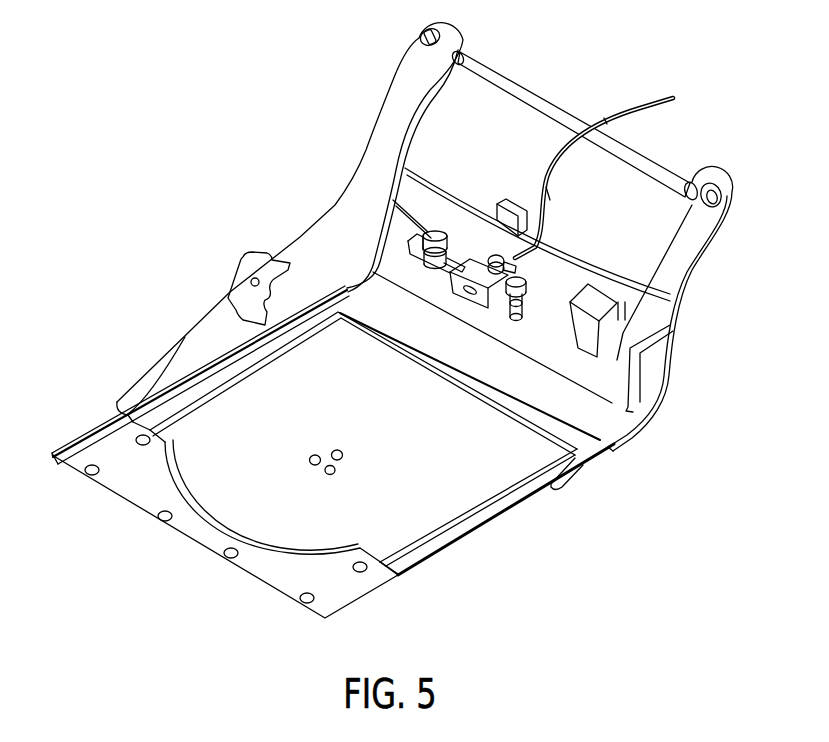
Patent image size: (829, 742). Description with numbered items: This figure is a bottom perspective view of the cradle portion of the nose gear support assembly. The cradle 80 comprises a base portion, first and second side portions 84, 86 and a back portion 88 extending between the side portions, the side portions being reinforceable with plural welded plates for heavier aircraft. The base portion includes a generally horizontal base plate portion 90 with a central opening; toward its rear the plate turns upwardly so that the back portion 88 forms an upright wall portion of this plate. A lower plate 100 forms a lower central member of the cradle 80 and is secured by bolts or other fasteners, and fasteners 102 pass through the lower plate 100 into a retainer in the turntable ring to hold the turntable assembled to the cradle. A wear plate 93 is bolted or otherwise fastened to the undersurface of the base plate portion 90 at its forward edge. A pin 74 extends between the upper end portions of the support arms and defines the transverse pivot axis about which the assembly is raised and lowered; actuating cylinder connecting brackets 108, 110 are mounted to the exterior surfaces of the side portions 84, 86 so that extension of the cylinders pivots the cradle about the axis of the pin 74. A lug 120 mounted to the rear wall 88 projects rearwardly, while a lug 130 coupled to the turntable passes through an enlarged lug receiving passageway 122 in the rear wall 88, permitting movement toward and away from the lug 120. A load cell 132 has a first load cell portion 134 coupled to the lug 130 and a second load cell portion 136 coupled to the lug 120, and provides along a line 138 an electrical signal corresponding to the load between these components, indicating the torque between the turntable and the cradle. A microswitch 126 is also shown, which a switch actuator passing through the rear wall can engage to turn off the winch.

The pin 74 is at (575, 125).
The cradle 80 is at (392, 340).
The first side portion 84 is at (290, 222).
The second side portion 86 is at (620, 476).
The back portion 88 is at (670, 308).
The base plate portion 90 is at (314, 452).
The wear plate 93 is at (226, 546).
The lower plate 100 is at (497, 509).
The fasteners 102 is at (323, 474).
The actuating cylinder connecting bracket 108 is at (236, 288).
The actuating cylinder connecting bracket 110 is at (573, 497).
The lug 120 is at (443, 211).
The lug receiving passageway 122 is at (534, 365).
The microswitch 126 is at (668, 368).
The lug 130 is at (554, 280).
The load cell 132 is at (497, 222).
The first load cell portion 134 is at (466, 340).
The second load cell portion 136 is at (433, 316).
The line 138 is at (594, 156).